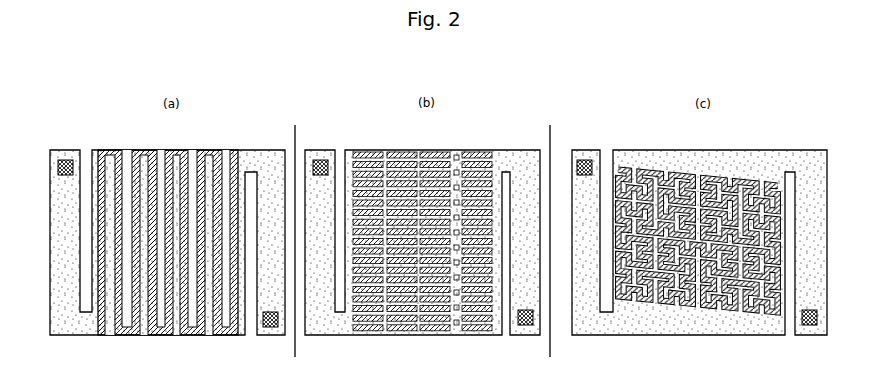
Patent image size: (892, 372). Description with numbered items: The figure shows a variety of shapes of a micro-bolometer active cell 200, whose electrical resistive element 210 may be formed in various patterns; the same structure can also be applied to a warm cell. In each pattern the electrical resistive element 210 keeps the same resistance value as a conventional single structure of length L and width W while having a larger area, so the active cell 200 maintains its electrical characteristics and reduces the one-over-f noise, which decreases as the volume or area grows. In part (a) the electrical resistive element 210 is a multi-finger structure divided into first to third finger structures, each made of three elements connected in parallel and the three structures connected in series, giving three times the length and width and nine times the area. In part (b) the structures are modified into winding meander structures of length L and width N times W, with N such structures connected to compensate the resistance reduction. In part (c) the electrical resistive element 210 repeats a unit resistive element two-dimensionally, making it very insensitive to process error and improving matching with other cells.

The micro-bolometer active cell 200 is at (68, 125).
The electrical resistive element 210 is at (657, 302).